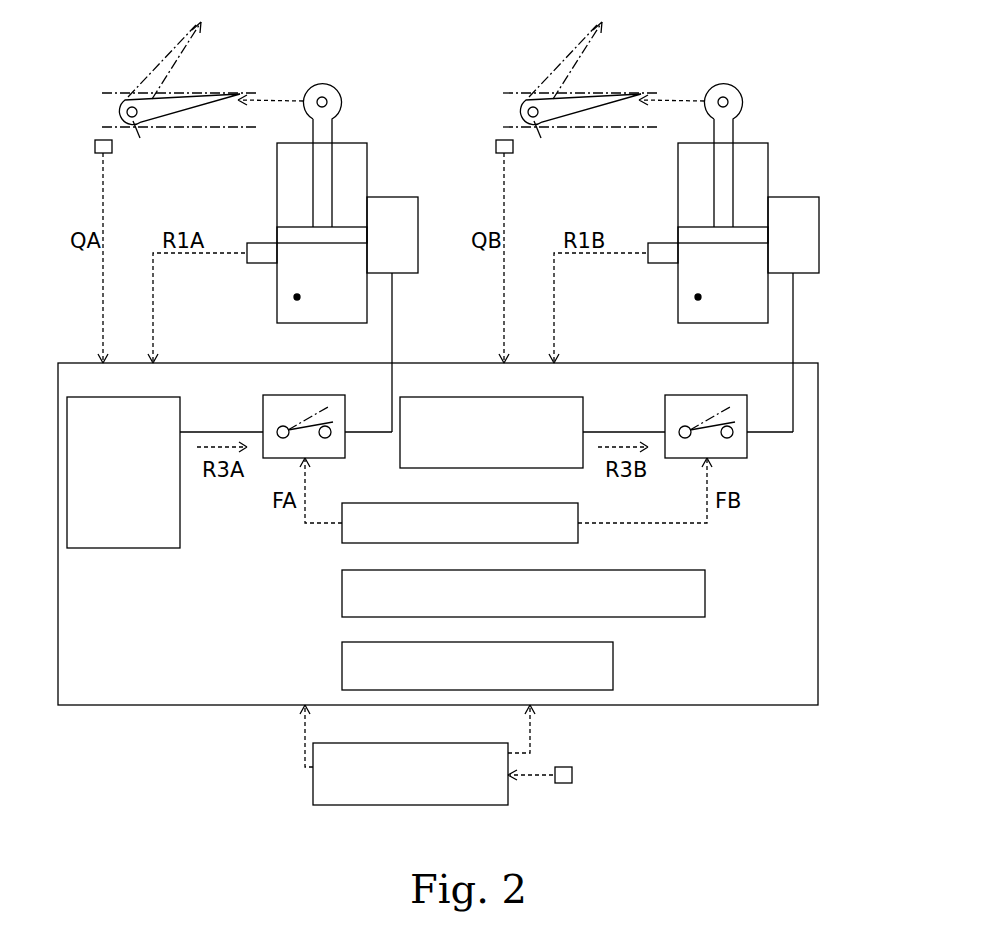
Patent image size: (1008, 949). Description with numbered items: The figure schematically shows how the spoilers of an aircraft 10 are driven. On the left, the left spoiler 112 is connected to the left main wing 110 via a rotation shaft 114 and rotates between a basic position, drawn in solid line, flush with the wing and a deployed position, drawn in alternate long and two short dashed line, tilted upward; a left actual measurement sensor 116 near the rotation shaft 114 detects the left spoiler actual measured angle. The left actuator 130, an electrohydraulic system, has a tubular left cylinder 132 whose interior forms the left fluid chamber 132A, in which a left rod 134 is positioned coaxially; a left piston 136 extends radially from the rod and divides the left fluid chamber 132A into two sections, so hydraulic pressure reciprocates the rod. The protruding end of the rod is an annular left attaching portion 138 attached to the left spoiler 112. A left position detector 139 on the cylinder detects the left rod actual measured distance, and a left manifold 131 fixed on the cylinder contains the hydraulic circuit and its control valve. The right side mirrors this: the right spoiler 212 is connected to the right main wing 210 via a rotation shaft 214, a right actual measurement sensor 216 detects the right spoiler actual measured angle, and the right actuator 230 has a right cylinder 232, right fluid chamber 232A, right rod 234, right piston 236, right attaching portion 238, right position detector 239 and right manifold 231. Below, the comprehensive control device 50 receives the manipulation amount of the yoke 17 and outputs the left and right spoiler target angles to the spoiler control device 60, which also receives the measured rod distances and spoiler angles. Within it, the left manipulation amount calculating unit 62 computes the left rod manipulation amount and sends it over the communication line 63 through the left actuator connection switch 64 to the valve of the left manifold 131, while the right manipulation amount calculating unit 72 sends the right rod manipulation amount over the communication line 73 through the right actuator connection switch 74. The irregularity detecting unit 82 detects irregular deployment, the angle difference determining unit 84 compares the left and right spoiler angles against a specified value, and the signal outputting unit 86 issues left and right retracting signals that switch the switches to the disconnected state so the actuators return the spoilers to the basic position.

The aircraft 10 is at (795, 727).
The yoke 17 is at (573, 776).
The comprehensive control device 50 is at (437, 744).
The spoiler control device 60 is at (810, 364).
The left manipulation amount calculating unit 62 is at (122, 391).
The communication line 63 is at (197, 431).
The left actuator connection switch 64 is at (287, 391).
The right manipulation amount calculating unit 72 is at (525, 391).
The communication line 73 is at (597, 431).
The right actuator connection switch 74 is at (690, 391).
The irregularity detecting unit 82 is at (437, 643).
The angle difference determining unit 84 is at (437, 573).
The signal outputting unit 86 is at (437, 501).
The left main wing 110 is at (118, 92).
The left spoiler 112 is at (203, 92).
The rotation shaft 114 is at (145, 143).
The left actual measurement sensor 116 is at (95, 147).
The left actuator 130 is at (391, 157).
The left manifold 131 is at (392, 197).
The left cylinder 132 is at (277, 158).
The left fluid chamber 132A is at (294, 297).
The left rod 134 is at (334, 130).
The left piston 136 is at (335, 243).
The left attaching portion 138 is at (340, 89).
The left position detector 139 is at (258, 243).
The right main wing 210 is at (576, 71).
The right spoiler 212 is at (606, 60).
The rotation shaft 214 is at (546, 143).
The right actual measurement sensor 216 is at (487, 251).
The right actuator 230 is at (829, 148).
The right manifold 231 is at (813, 301).
The right cylinder 232 is at (687, 233).
The right fluid chamber 232A is at (652, 301).
The right rod 234 is at (754, 155).
The right piston 236 is at (723, 263).
The right attaching portion 238 is at (721, 91).
The right position detector 239 is at (613, 280).